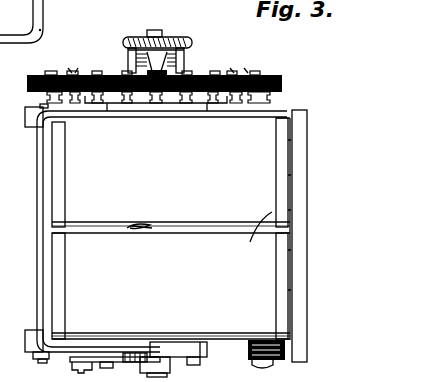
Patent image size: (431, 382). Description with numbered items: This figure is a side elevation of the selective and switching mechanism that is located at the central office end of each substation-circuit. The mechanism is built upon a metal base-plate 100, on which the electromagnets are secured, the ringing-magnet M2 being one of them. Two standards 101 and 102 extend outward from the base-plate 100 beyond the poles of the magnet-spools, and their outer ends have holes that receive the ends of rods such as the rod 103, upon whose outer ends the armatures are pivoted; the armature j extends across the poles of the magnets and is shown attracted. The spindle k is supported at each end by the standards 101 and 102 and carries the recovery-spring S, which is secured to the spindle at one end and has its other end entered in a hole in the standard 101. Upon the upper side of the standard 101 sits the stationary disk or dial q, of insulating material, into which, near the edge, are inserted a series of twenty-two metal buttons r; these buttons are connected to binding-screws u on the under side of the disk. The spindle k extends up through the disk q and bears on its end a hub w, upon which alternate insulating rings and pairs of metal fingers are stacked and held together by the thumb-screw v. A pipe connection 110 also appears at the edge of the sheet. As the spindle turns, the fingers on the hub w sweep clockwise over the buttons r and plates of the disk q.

The pipe 110 is at (27, 8).
The stationary disk or dial q is at (26, 83).
The binding-screws u is at (41, 96).
The metal buttons r is at (155, 62).
The spindle k is at (154, 24).
The thumb-screw v is at (158, 35).
The hub w is at (162, 61).
The armature j is at (43, 313).
The rod 103 is at (36, 166).
The ringing-magnet M2 is at (278, 208).
The metal base-plate 100 is at (303, 233).
The standard 101 is at (283, 118).
The recovery-spring S is at (171, 228).
The standard 102 is at (240, 340).